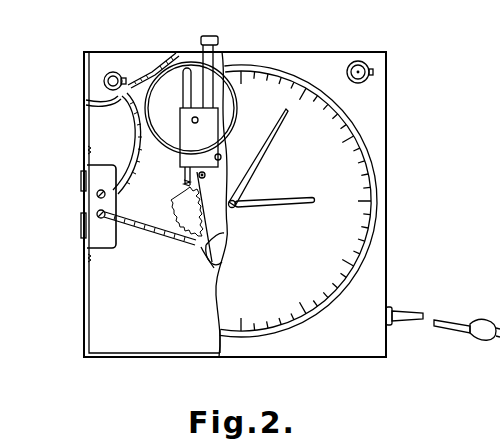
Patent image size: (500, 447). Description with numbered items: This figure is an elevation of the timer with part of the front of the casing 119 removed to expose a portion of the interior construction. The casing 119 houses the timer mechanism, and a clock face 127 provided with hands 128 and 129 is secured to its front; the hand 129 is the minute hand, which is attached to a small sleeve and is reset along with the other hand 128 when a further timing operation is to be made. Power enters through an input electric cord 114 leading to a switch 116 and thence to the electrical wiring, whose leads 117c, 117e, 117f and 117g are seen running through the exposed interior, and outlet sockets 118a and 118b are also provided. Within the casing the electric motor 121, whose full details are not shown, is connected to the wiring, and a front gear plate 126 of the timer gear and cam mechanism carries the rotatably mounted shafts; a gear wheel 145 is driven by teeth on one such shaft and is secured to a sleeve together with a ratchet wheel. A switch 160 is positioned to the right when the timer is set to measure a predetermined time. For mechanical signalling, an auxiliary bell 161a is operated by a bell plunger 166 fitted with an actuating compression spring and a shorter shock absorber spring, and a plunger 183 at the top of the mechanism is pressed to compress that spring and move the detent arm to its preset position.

The input electric cord 114 is at (415, 319).
The switch 116 is at (371, 72).
The lead 117c is at (150, 243).
The lead 117e is at (127, 180).
The lead 117f is at (175, 53).
The lead 117g is at (86, 100).
The outlet socket 118a is at (82, 180).
The outlet socket 118b is at (82, 225).
The casing 119 is at (323, 60).
The electric motor 121 is at (201, 247).
The front gear plate 126 is at (212, 255).
The clock face 127 is at (362, 188).
The hand 128 is at (266, 150).
The minute hand 129 is at (274, 205).
The gear wheel 145 is at (184, 207).
The switch 160 is at (122, 55).
The auxiliary bell 161a is at (181, 65).
The bell plunger 166 is at (186, 87).
The plunger 183 is at (222, 42).